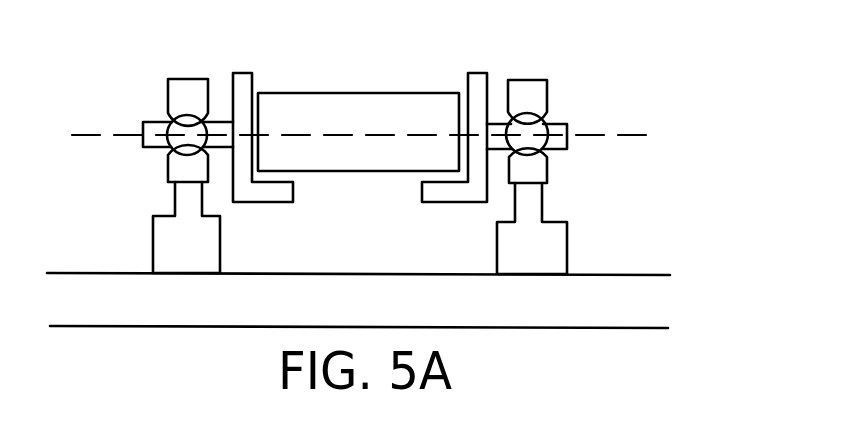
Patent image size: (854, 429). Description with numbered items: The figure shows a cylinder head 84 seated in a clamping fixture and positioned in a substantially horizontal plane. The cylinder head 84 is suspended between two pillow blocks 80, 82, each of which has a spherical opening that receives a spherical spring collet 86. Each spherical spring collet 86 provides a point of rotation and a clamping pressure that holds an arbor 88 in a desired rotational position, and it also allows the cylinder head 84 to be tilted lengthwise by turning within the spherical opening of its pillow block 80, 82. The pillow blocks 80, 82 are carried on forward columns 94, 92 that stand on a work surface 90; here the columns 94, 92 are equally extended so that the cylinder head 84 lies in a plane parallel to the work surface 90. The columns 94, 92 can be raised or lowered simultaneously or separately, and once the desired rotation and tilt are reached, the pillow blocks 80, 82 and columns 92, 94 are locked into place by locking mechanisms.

The pillow block 80 is at (188, 80).
The pillow block 82 is at (517, 82).
The cylinder head 84 is at (390, 93).
The spherical spring collet 86 is at (548, 124).
The arbor 88 is at (147, 123).
The work surface 90 is at (405, 273).
The column 92 is at (542, 207).
The column 94 is at (175, 195).